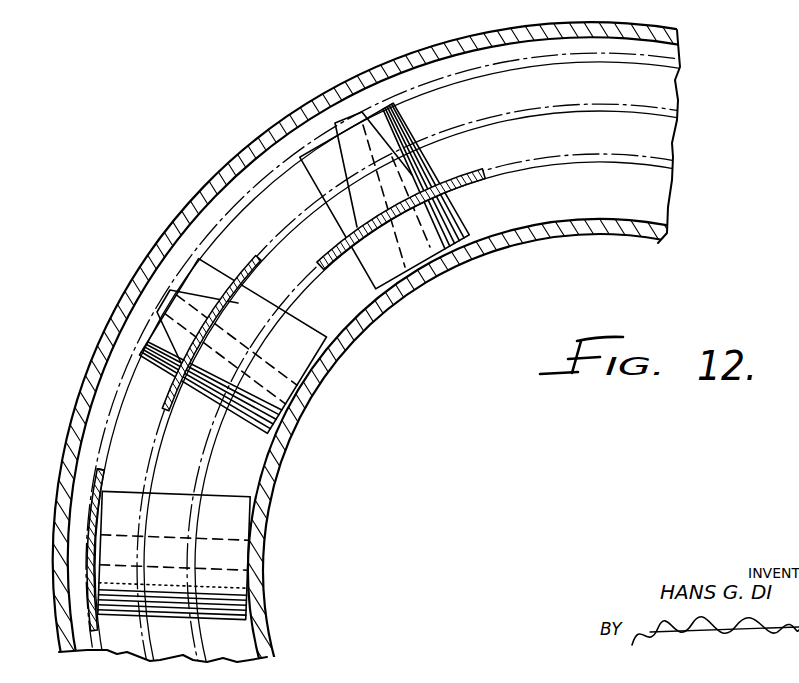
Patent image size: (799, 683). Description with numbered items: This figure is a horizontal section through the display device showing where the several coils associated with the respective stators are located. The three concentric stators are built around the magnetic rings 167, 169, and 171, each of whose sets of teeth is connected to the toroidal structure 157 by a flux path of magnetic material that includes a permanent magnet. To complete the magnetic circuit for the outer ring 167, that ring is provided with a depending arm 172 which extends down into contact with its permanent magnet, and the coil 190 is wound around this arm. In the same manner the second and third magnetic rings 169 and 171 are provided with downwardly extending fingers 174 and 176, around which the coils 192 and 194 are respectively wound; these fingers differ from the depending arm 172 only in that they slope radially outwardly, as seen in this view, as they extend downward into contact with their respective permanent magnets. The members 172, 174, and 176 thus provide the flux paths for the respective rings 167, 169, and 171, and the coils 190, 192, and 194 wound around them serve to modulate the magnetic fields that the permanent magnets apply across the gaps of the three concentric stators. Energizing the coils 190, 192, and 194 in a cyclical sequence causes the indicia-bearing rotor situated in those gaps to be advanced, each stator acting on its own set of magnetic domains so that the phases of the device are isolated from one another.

The toroidal structure 157 is at (597, 237).
The magnetic ring 167 is at (99, 468).
The magnetic ring 169 is at (253, 257).
The magnetic ring 171 is at (484, 173).
The depending arm 172 is at (97, 557).
The downwardly extending finger 174 is at (158, 327).
The downwardly extending finger 176 is at (410, 177).
The coil 190 is at (238, 518).
The coil 192 is at (312, 348).
The coil 194 is at (462, 243).